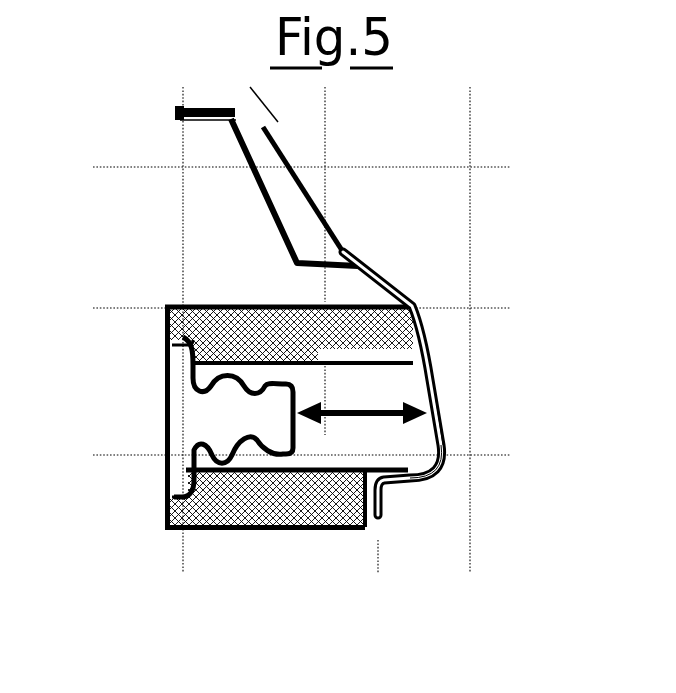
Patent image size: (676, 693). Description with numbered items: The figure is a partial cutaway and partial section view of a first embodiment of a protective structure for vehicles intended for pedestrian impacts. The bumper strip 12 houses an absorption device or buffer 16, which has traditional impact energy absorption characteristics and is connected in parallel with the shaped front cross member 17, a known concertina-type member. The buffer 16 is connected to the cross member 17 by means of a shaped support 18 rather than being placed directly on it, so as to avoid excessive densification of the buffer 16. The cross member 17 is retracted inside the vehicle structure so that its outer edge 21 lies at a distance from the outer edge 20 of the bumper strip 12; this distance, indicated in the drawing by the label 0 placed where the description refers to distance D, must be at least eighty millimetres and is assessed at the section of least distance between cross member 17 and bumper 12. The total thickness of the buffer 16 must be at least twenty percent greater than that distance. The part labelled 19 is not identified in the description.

The bumper strip 12 is at (447, 360).
The buffer 16 is at (336, 292).
The cross member 17 is at (272, 425).
The shaped support 18 is at (150, 327).
The frame wall 19 is at (162, 408).
The outer edge of the bumper 20 is at (440, 428).
The outer edge of the cross member 21 is at (296, 397).
The reference point 0 is at (363, 420).